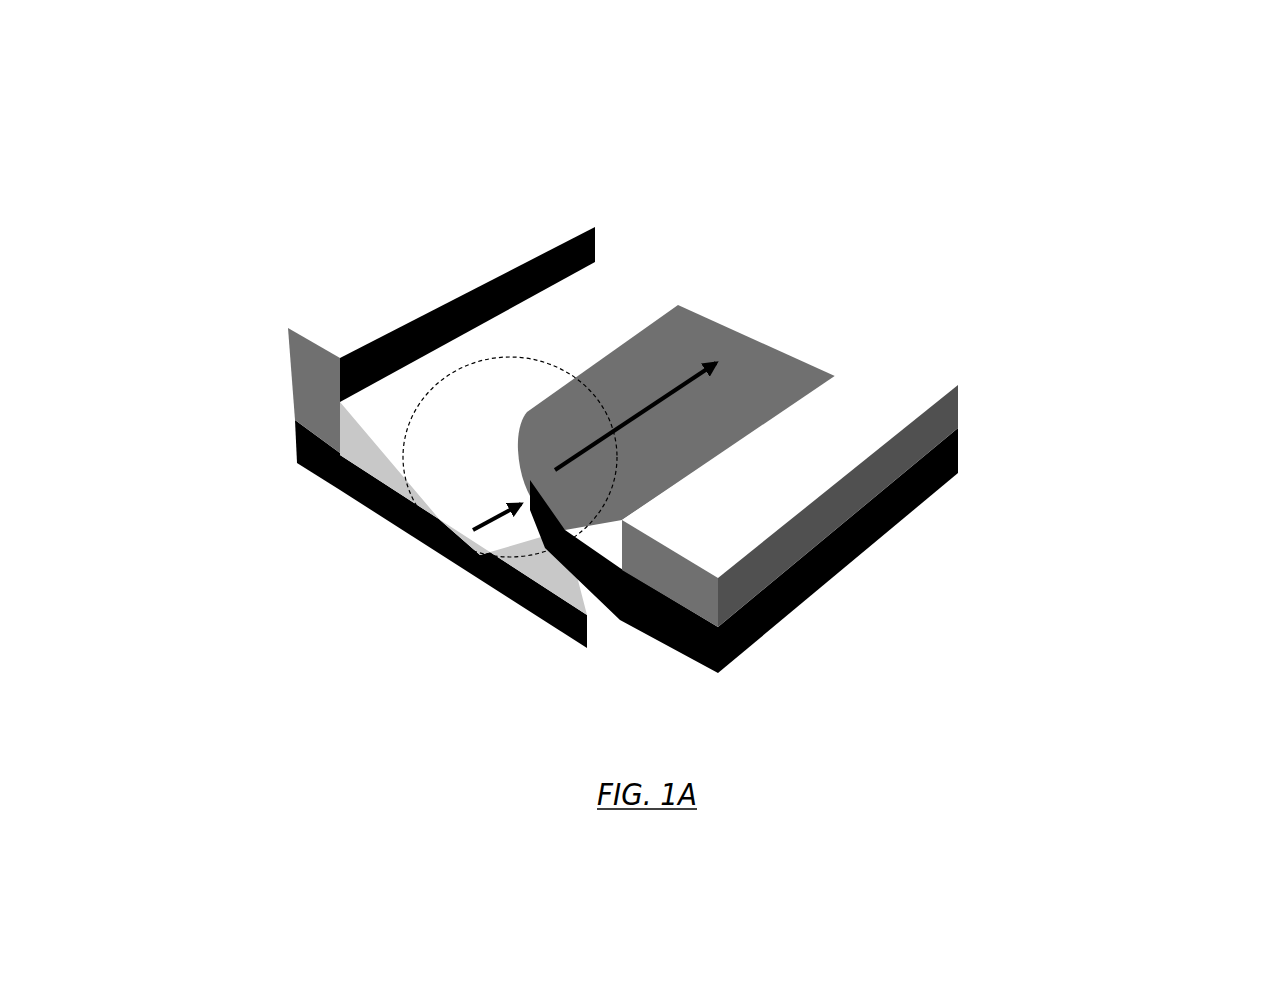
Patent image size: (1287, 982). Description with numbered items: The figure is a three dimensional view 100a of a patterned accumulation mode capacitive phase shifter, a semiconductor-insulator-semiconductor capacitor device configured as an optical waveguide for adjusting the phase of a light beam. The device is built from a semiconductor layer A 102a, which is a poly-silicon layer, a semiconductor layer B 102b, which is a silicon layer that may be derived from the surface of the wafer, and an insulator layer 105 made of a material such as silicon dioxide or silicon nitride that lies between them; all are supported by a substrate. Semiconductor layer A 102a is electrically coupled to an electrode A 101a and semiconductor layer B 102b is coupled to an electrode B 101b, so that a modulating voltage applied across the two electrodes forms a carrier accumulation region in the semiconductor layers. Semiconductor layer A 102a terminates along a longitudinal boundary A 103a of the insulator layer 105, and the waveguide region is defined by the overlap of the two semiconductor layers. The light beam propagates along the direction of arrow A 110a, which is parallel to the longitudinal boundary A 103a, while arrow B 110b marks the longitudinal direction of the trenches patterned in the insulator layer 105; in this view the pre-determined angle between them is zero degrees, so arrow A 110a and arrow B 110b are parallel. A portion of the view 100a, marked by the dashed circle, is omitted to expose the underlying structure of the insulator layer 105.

The 3D view 100a is at (668, 379).
The electrode A 101a is at (873, 485).
The electrode B 101b is at (534, 309).
The semiconductor layer A 102a is at (898, 489).
The semiconductor layer B 102b is at (368, 534).
The longitudinal boundary A 103a is at (389, 390).
The insulator layer 105 is at (385, 438).
The arrow A 110a is at (628, 379).
The arrow B 110b is at (452, 457).